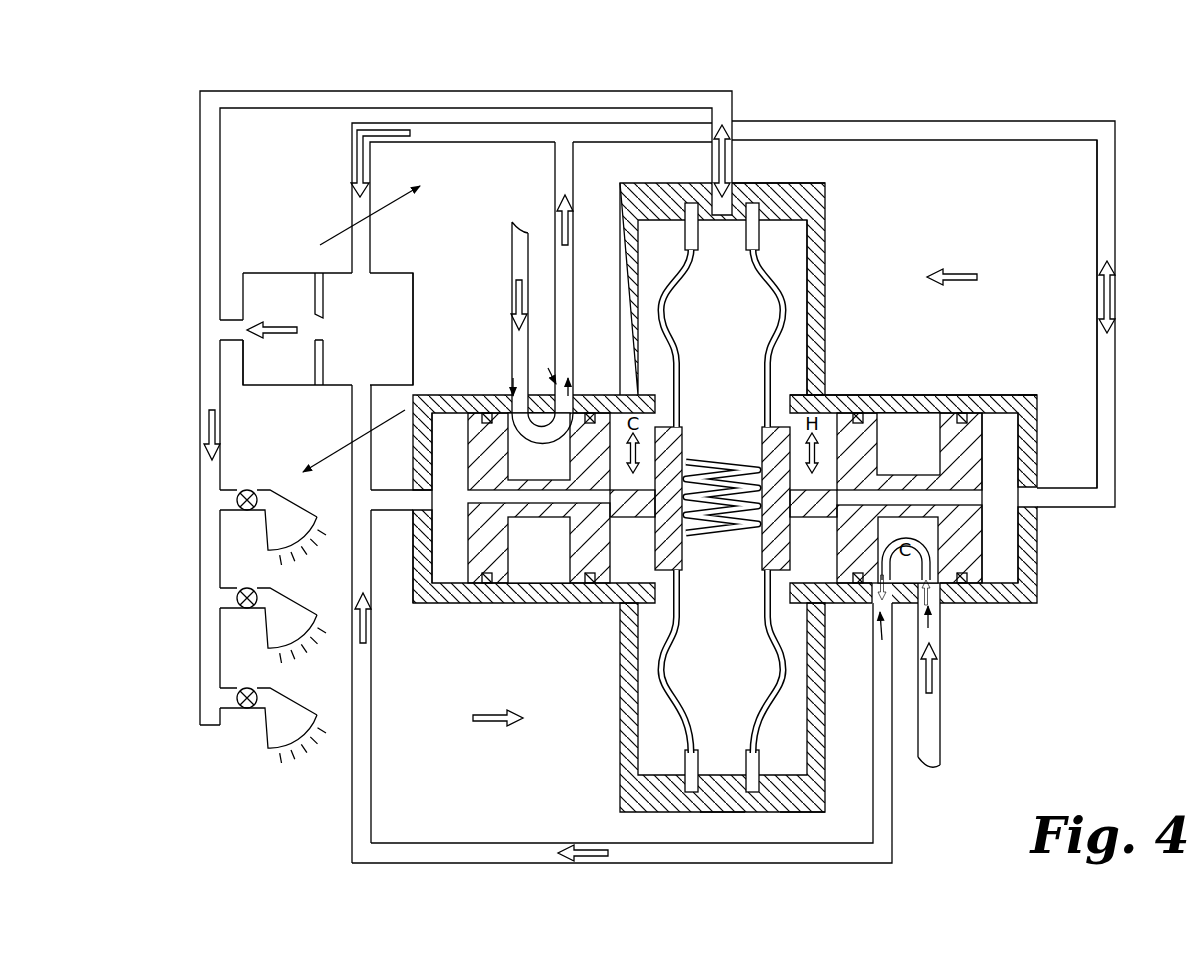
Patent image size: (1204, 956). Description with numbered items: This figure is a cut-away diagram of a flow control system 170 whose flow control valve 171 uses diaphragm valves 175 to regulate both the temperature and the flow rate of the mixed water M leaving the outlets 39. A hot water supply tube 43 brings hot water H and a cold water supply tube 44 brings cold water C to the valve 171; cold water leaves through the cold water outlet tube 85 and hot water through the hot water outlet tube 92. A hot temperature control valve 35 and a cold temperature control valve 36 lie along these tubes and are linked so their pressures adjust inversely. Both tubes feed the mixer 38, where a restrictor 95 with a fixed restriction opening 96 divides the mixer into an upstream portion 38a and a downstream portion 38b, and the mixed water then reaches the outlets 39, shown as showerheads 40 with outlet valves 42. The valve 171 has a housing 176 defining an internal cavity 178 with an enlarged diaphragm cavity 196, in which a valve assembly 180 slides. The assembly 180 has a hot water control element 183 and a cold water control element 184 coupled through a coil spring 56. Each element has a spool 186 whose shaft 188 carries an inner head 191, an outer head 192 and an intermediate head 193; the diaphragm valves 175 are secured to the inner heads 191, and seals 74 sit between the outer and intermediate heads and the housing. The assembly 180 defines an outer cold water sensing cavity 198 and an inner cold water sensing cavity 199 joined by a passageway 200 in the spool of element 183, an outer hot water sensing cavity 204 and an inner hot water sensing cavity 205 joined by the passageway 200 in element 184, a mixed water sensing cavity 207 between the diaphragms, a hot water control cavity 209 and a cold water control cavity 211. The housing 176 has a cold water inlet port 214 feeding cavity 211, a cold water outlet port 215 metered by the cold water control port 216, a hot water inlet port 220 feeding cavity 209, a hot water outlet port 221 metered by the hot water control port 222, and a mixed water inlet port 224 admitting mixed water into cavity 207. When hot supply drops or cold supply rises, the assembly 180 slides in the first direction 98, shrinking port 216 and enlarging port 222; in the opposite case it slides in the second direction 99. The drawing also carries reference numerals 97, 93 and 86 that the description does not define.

The flow control system 170 is at (1058, 78).
The motive fluid conduit 97 is at (276, 91).
The hot fluid return conduit 93 is at (838, 121).
The hot temperature control valve 35 is at (384, 206).
The mixer 38 is at (395, 273).
The restrictor 95 is at (313, 295).
The restriction opening 96 is at (330, 330).
The upstream portion 38a is at (386, 355).
The downstream portion 38b is at (266, 370).
The outlet valves 42 is at (245, 490).
The showerheads 40 is at (280, 520).
The outlets 39 is at (276, 778).
The cold temperature control valve 36 is at (354, 624).
The passage 86 is at (392, 490).
The passageway 200 is at (482, 497).
The outer cold water sensing cavity 198 is at (433, 524).
The outer head 192 is at (430, 574).
The hot water control element 183 is at (456, 600).
The seals 74 is at (487, 585).
The shaft 188 is at (516, 572).
The spool portion 186 is at (586, 585).
The hot water control cavity 209 is at (540, 582).
The intermediate head 193 is at (600, 585).
The inner head 191 is at (642, 606).
The first direction 98 is at (486, 723).
The cold water outlet tube 85 is at (548, 843).
The mixed water sensing cavity 207 is at (722, 777).
The inner hot water sensing cavity 205 is at (790, 777).
The cold water outlet port 215 is at (876, 615).
The cold water control port 216 is at (890, 612).
The cold water inlet port 214 is at (930, 620).
The cold water control cavity 211 is at (941, 604).
The cold water supply tube 44 is at (941, 742).
The valve assembly 180 is at (1022, 597).
The cold water control element 184 is at (958, 540).
The outer hot water sensing cavity 204 is at (1003, 450).
The housing 176 is at (985, 395).
The internal cavity 178 is at (788, 378).
The flow control valve 171 is at (825, 315).
The diaphragm valves 175 is at (672, 250).
The diaphragm cavity 196 is at (797, 232).
The mixed water inlet port 224 is at (727, 208).
The inner cold water sensing cavity 199 is at (636, 300).
The hot water outlet port 221 is at (568, 396).
The hot water inlet port 220 is at (513, 378).
The hot water control port 222 is at (548, 368).
The hot water supply tube 43 is at (510, 281).
The hot water outlet tube 92 is at (555, 195).
The spring 56 is at (705, 458).
The second direction 99 is at (977, 277).